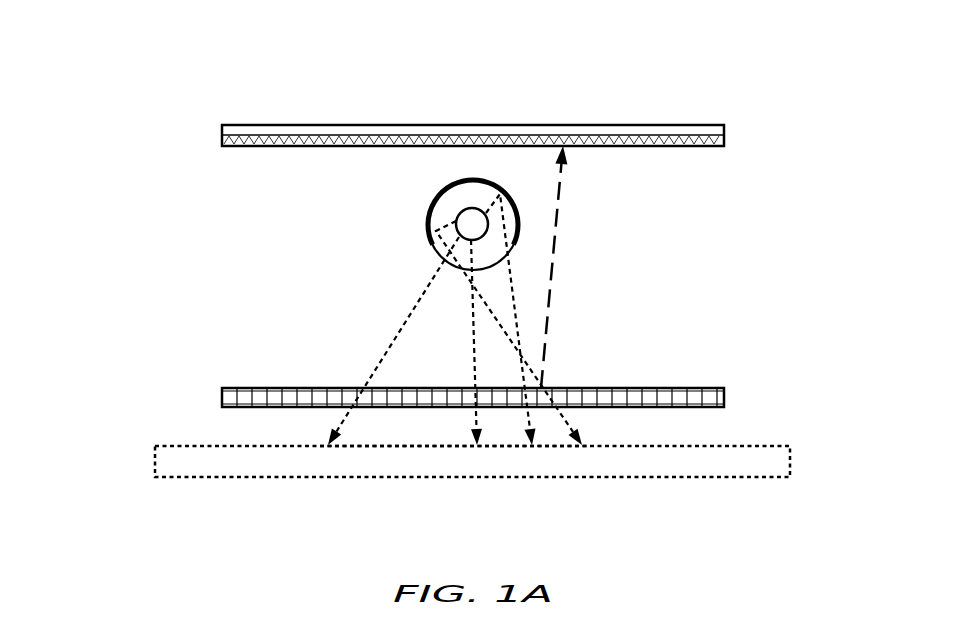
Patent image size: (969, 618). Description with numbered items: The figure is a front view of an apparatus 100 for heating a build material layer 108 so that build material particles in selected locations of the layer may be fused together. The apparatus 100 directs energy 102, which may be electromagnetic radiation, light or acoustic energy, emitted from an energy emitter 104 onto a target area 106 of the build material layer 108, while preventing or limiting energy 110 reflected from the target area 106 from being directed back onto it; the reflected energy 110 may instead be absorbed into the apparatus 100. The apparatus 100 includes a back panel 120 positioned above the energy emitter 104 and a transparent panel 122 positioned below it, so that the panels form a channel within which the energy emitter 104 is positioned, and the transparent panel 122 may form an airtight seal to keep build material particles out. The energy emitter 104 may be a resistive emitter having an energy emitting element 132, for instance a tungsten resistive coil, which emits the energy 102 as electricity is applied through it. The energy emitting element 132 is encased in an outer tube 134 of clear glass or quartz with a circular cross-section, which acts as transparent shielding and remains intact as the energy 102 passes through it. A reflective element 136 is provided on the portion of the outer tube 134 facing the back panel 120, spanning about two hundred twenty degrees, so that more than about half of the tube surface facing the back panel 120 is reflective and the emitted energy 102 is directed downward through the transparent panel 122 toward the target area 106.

The apparatus 100 is at (670, 70).
The energy 102 is at (513, 348).
The energy emitter 104 is at (390, 216).
The target area 106 is at (480, 447).
The build material layer 108 is at (253, 478).
The reflected energy 110 is at (549, 302).
The back panel 120 is at (260, 127).
The transparent panel 122 is at (221, 393).
The energy emitting element 132 is at (488, 223).
The outer tube 134 is at (440, 255).
The reflective element 136 is at (473, 181).